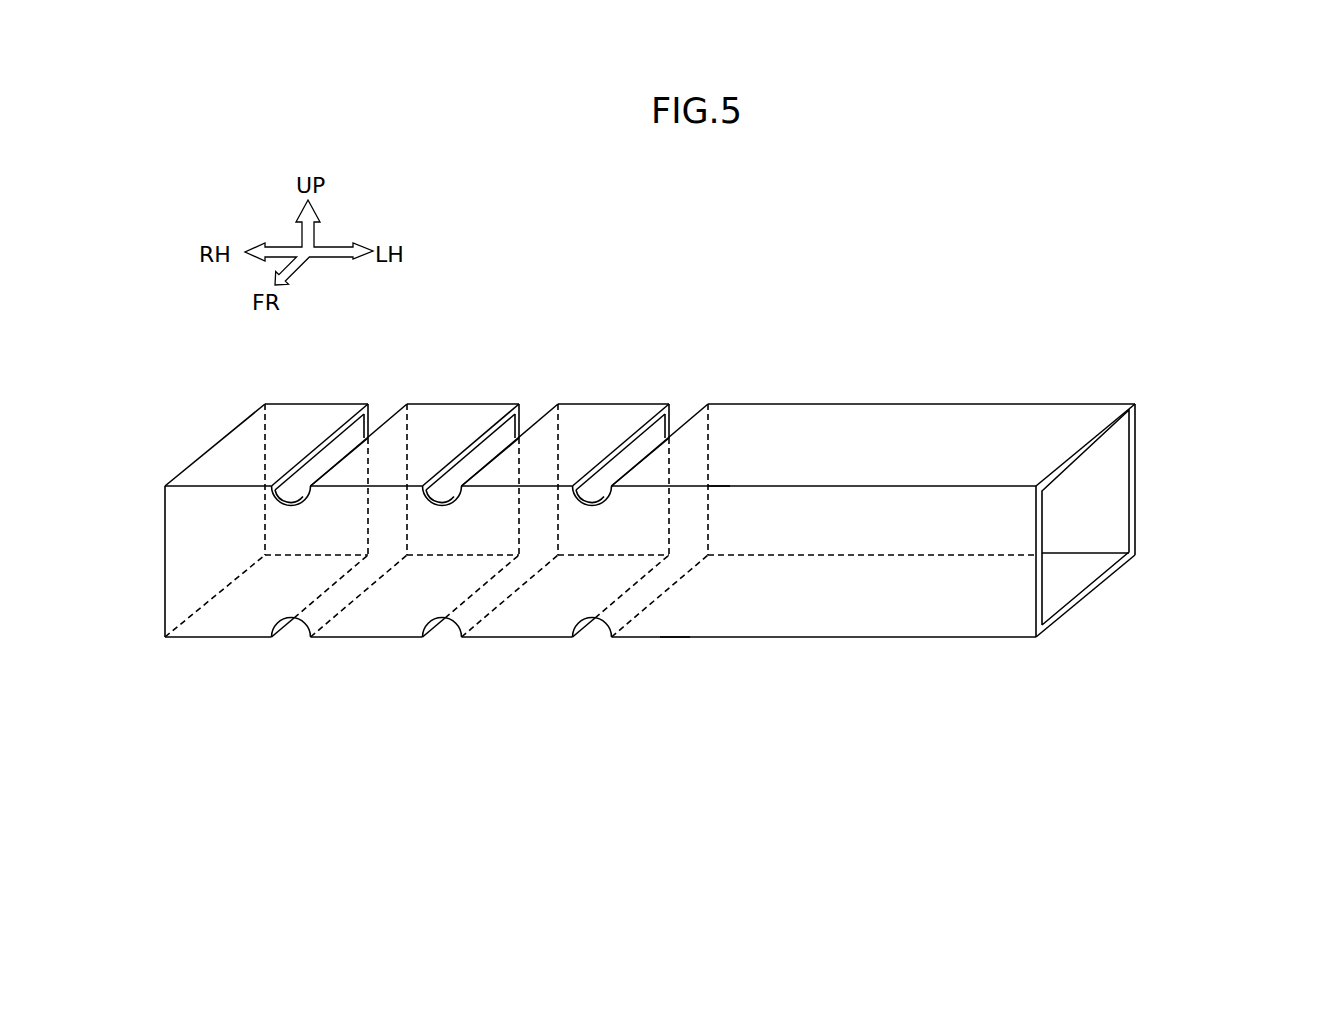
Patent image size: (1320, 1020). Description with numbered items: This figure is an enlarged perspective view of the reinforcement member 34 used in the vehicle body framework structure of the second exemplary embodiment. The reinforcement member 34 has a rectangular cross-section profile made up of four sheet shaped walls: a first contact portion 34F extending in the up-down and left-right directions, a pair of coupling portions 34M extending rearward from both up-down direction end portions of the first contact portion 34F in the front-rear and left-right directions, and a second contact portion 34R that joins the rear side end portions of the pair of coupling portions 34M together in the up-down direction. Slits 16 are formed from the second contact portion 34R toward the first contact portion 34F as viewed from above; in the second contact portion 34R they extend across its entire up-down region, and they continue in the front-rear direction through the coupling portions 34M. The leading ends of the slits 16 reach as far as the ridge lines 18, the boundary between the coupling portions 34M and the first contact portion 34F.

The reinforcement member 34 is at (708, 498).
The coupling portions 34M is at (882, 435).
The first contact portion 34F is at (834, 598).
The second contact portion 34R is at (1103, 500).
The slits 16 is at (354, 440).
The ridge lines 18 is at (718, 487).